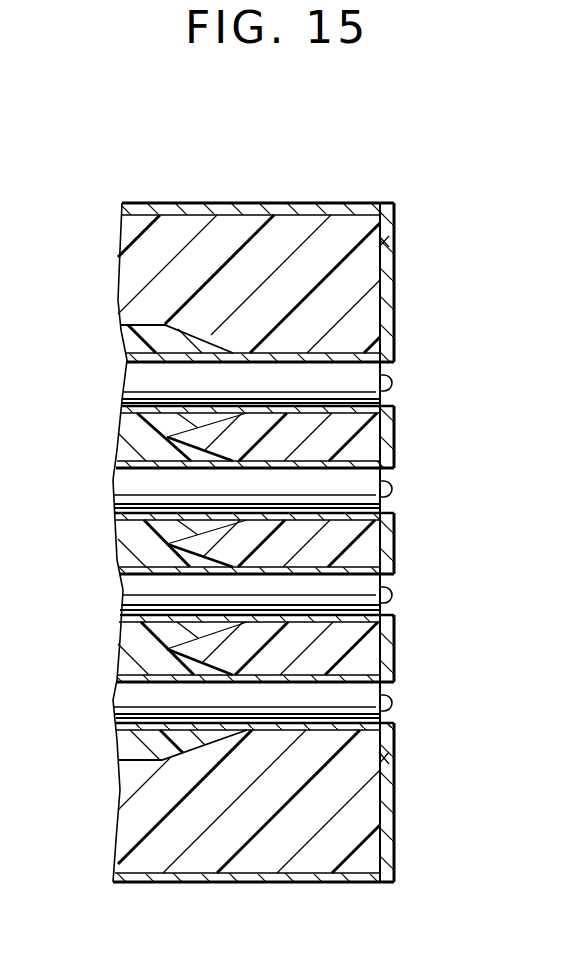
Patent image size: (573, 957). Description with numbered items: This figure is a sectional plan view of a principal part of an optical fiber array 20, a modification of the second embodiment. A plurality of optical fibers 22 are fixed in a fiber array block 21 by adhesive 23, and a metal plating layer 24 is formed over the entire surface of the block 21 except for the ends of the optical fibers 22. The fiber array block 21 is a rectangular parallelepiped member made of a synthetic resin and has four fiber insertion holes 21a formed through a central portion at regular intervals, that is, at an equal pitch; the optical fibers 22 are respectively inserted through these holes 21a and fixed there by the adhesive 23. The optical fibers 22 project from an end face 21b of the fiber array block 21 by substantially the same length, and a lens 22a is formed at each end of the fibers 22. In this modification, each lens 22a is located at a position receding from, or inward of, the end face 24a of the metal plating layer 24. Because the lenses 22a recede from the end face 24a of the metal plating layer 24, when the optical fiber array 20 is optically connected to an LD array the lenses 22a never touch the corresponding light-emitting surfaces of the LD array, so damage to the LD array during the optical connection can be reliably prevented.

The optical fiber array 20 is at (279, 120).
The fiber array block 21 is at (313, 207).
The fiber insertion hole 21a is at (390, 500).
The end face 21b is at (383, 243).
The optical fiber 22 is at (385, 397).
The lens 22a is at (389, 383).
The adhesive 23 is at (190, 343).
The metal plating layer 24 is at (396, 270).
The end face 24a is at (397, 305).